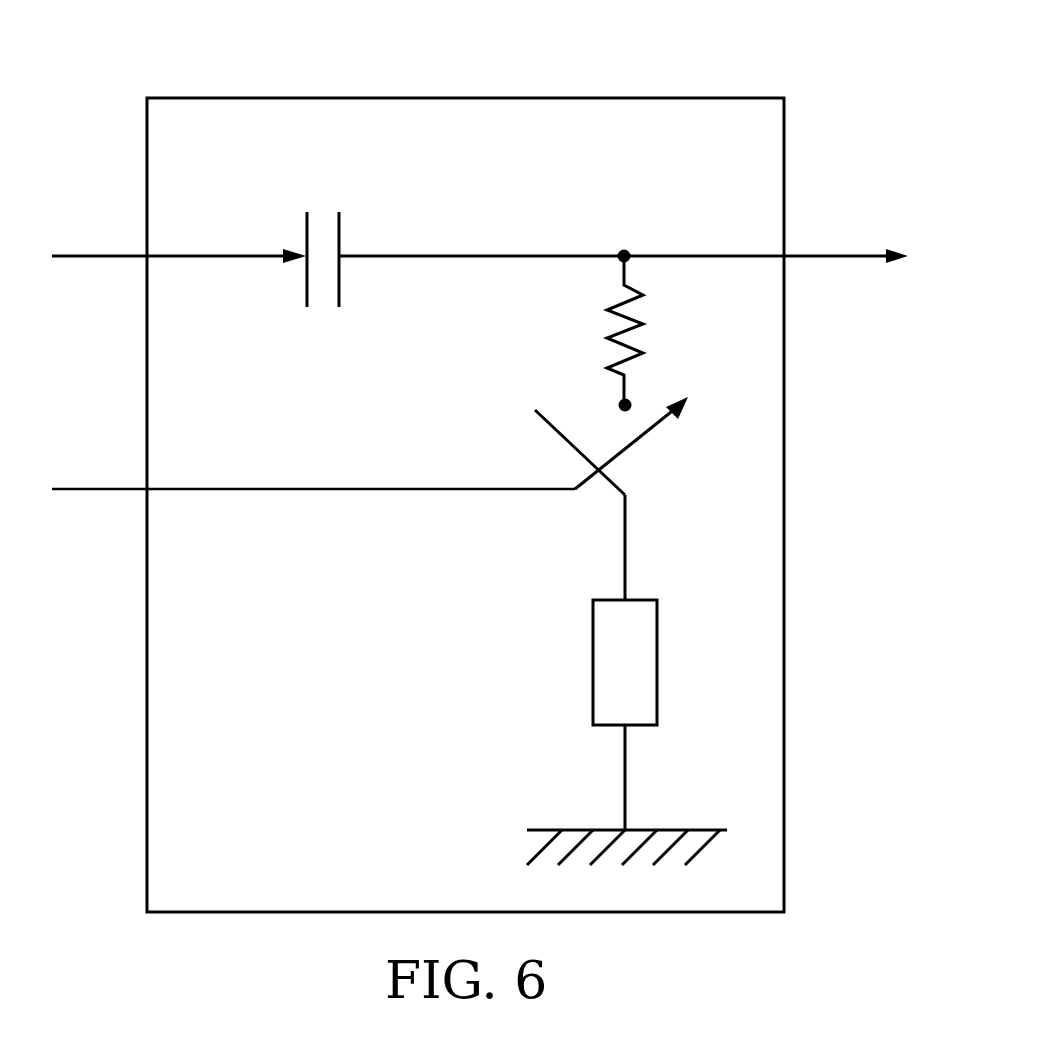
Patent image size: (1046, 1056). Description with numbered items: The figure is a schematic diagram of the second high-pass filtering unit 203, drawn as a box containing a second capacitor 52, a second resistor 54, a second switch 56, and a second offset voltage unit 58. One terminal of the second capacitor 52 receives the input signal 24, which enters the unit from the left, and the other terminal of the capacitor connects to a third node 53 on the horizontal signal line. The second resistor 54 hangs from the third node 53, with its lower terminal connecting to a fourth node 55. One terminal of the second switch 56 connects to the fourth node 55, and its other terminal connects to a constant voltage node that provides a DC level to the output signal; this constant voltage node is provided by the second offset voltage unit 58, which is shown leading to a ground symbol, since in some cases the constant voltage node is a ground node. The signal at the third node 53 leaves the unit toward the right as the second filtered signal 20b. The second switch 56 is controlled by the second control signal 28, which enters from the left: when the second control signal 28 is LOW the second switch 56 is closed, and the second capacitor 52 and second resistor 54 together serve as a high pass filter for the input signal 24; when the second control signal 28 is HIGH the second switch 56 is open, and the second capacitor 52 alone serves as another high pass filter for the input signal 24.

The second high-pass filtering unit 203 is at (507, 97).
The input signal 24 is at (116, 253).
The second capacitor 52 is at (323, 238).
The third node 53 is at (624, 250).
The second resistor 54 is at (635, 345).
The fourth node 55 is at (617, 404).
The second control signal 28 is at (113, 486).
The second switch 56 is at (612, 483).
The second offset voltage unit 58 is at (657, 615).
The second filtered signal 20b is at (812, 255).